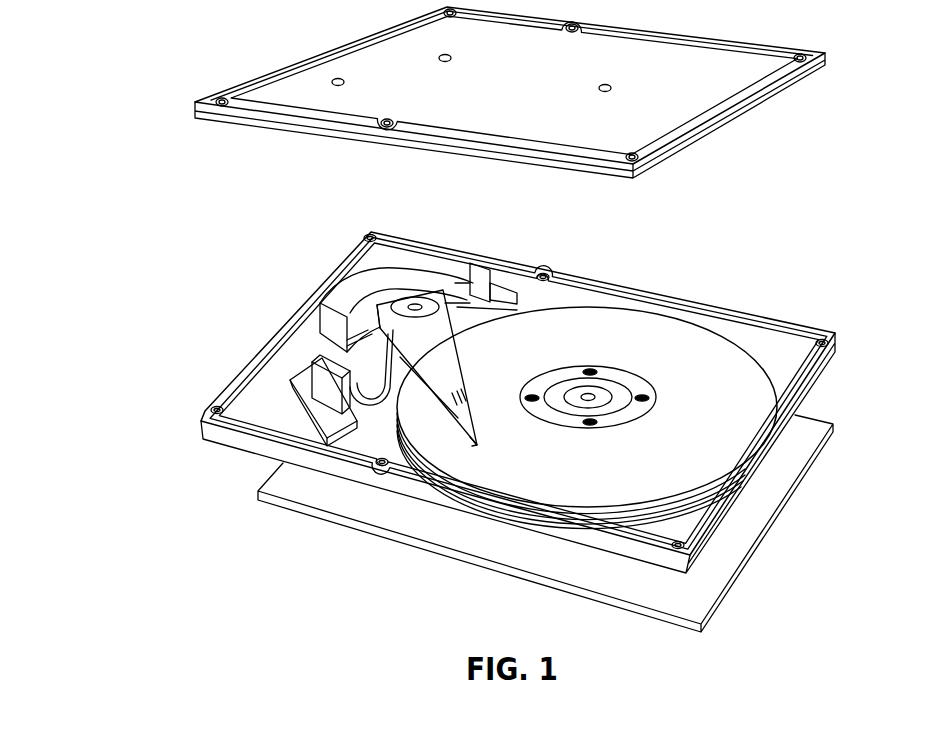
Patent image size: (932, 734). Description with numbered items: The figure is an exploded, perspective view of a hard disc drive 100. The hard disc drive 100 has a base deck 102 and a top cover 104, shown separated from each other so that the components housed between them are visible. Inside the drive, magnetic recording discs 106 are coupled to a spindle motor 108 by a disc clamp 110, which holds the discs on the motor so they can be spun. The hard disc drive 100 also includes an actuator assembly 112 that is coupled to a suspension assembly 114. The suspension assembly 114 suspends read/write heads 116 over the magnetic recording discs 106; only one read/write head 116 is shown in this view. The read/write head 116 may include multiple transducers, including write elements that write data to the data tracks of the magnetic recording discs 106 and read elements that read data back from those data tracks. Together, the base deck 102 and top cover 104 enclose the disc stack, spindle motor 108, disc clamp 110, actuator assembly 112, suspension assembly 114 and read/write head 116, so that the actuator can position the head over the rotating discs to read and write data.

The hard disc drive 100 is at (110, 44).
The base deck 102 is at (817, 377).
The top cover 104 is at (645, 83).
The magnetic recording discs 106 is at (695, 419).
The spindle motor 108 is at (597, 393).
The disc clamp 110 is at (628, 410).
The actuator assembly 112 is at (458, 345).
The suspension assembly 114 is at (468, 424).
The read/write head 116 is at (473, 442).